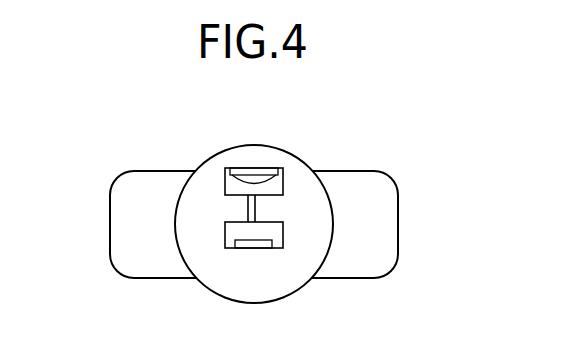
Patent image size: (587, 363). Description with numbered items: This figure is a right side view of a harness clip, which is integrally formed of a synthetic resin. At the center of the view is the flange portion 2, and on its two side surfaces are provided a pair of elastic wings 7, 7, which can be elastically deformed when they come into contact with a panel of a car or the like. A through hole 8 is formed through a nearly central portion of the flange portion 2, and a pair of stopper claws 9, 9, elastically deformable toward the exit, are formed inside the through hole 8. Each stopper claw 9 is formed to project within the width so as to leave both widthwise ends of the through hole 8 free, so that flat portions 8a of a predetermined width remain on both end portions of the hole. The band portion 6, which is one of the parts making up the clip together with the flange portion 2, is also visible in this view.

The flange portion 2 is at (297, 152).
The band portion 6 is at (243, 169).
The elastic wings 7 is at (116, 219).
The through hole 8 is at (231, 250).
The flat portions 8a is at (277, 250).
The stopper claws 9 is at (251, 250).